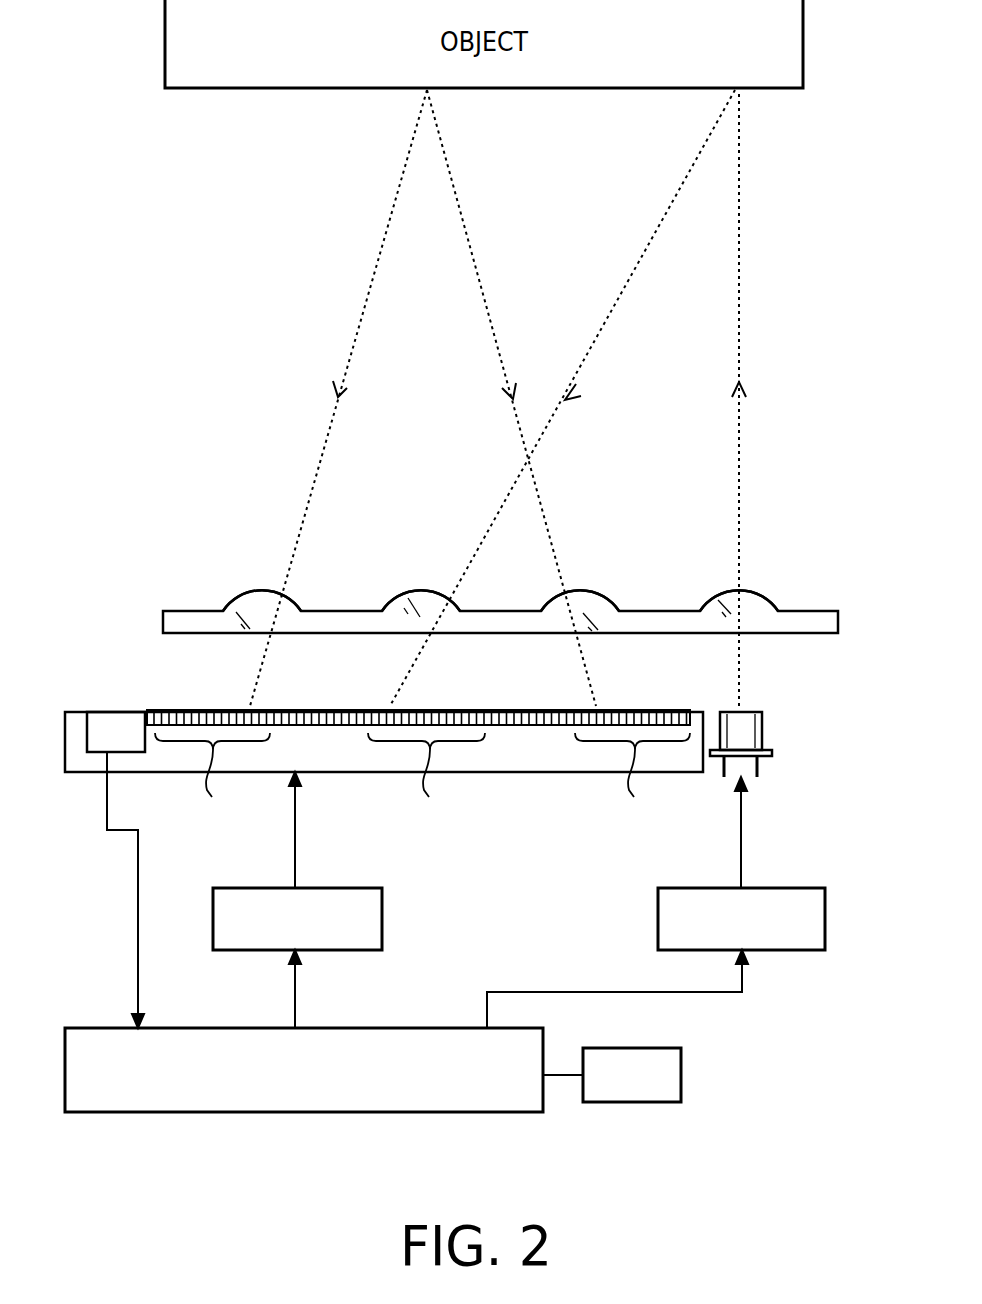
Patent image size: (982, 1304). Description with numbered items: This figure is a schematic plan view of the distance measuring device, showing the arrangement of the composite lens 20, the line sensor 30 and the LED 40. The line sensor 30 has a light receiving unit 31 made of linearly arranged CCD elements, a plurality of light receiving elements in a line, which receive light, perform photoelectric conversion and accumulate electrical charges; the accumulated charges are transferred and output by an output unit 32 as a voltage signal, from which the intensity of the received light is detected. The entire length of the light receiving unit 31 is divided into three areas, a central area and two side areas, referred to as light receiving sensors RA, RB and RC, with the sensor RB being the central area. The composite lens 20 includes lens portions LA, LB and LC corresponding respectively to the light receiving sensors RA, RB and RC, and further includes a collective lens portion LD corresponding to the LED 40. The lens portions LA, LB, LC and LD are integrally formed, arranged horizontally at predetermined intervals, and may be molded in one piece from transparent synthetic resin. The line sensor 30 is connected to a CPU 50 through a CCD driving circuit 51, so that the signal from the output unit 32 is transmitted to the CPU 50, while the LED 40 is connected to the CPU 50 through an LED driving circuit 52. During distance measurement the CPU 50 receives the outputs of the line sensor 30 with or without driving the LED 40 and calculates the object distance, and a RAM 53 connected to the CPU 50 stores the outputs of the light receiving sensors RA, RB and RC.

The composite lens 20 is at (481, 580).
The lens portion LA is at (255, 590).
The lens portion LB is at (408, 590).
The lens portion LC is at (600, 592).
The collective lens portion LD is at (757, 592).
The line sensor 30 is at (359, 736).
The light receiving unit 31 is at (681, 678).
The output unit 32 is at (97, 734).
The light receiving sensor RA is at (212, 781).
The light receiving sensor RB is at (426, 781).
The light receiving sensor RC is at (632, 781).
The LED 40 is at (763, 727).
The CPU 50 is at (378, 1028).
The CCD driving circuit 51 is at (333, 888).
The LED driving circuit 52 is at (793, 888).
The RAM 53 is at (683, 1071).